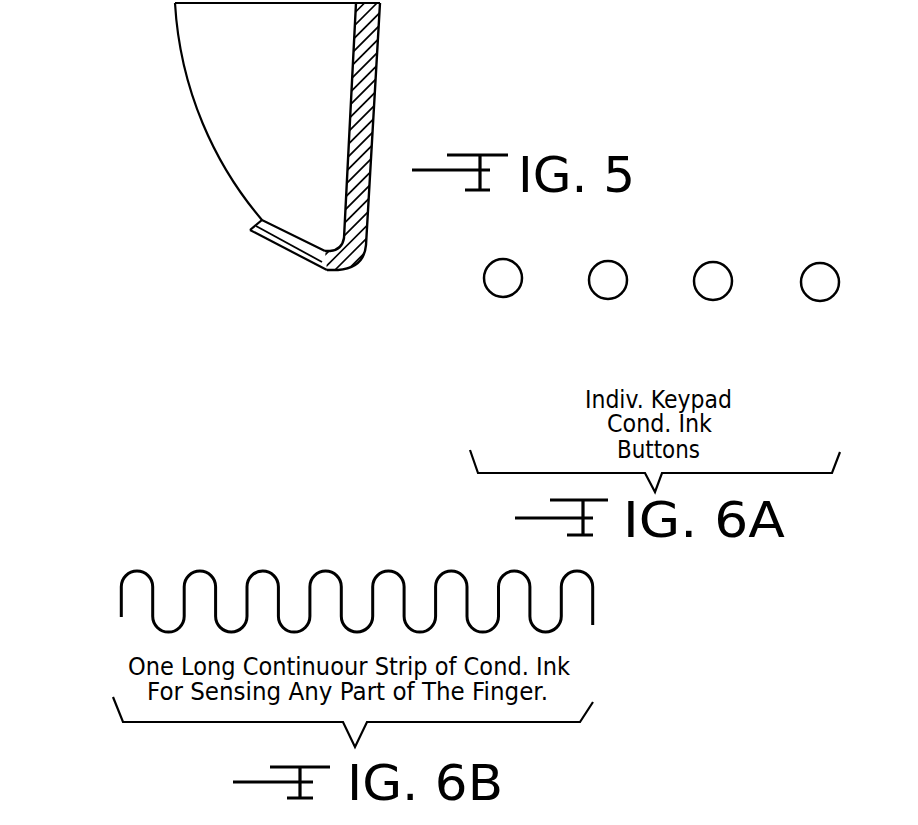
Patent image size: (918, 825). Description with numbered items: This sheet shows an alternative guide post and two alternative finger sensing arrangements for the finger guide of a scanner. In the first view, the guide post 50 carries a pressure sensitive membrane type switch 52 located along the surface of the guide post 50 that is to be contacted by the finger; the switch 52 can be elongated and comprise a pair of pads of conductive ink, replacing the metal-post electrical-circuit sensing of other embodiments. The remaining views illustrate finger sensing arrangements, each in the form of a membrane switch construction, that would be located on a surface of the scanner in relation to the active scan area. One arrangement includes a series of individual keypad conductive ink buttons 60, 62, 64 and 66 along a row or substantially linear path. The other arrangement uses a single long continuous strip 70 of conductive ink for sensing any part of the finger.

In FIG. 5, the guide post 50 is at (262, 158).
In FIG. 5, the pressure sensitive membrane type switch 52 is at (384, 133).
In FIG. 6A, the individual keypad conductive ink button 60 is at (501, 302).
In FIG. 6A, the individual keypad conductive ink button 62 is at (610, 303).
In FIG. 6A, the individual keypad conductive ink button 64 is at (714, 306).
In FIG. 6A, the individual keypad conductive ink button 66 is at (821, 306).
In FIG. 6B, the single long continuous strip of conductive ink 70 is at (390, 571).